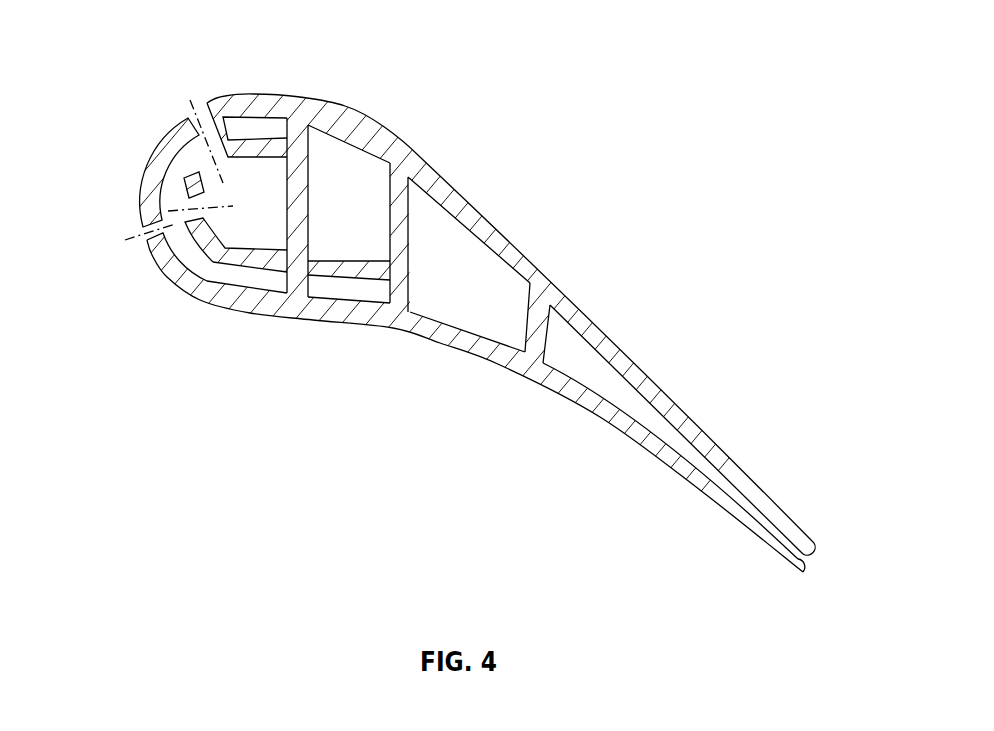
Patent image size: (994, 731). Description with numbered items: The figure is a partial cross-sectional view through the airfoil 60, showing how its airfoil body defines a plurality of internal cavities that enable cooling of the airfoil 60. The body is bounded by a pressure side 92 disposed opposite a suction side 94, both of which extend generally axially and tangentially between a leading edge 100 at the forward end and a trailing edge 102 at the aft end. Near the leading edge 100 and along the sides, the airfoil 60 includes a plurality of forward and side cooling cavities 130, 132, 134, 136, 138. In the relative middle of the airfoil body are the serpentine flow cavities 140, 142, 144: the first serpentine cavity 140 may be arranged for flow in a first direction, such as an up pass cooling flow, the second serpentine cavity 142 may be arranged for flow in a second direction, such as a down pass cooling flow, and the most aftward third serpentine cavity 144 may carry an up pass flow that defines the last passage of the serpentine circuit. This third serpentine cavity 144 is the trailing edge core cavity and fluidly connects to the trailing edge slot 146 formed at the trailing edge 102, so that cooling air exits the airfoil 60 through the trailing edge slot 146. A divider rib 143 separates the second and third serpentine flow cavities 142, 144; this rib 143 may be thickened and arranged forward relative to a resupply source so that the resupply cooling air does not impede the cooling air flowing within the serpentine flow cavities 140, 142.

The airfoil 60 is at (497, 365).
The pressure side 92 is at (526, 378).
The suction side 94 is at (484, 212).
The leading edge 100 is at (143, 178).
The trailing edge 102 is at (816, 550).
The forward cooling cavity 130 is at (258, 285).
The forward cooling cavity 132 is at (343, 292).
The forward cooling cavity 134 is at (178, 172).
The side cooling cavity 136 is at (280, 124).
The side cooling cavity 138 is at (276, 172).
The first serpentine cavity 140 is at (348, 153).
The second serpentine cavity 142 is at (492, 268).
The divider rib 143 is at (530, 332).
The third serpentine cavity 144 is at (580, 340).
The trailing edge slot 146 is at (810, 568).